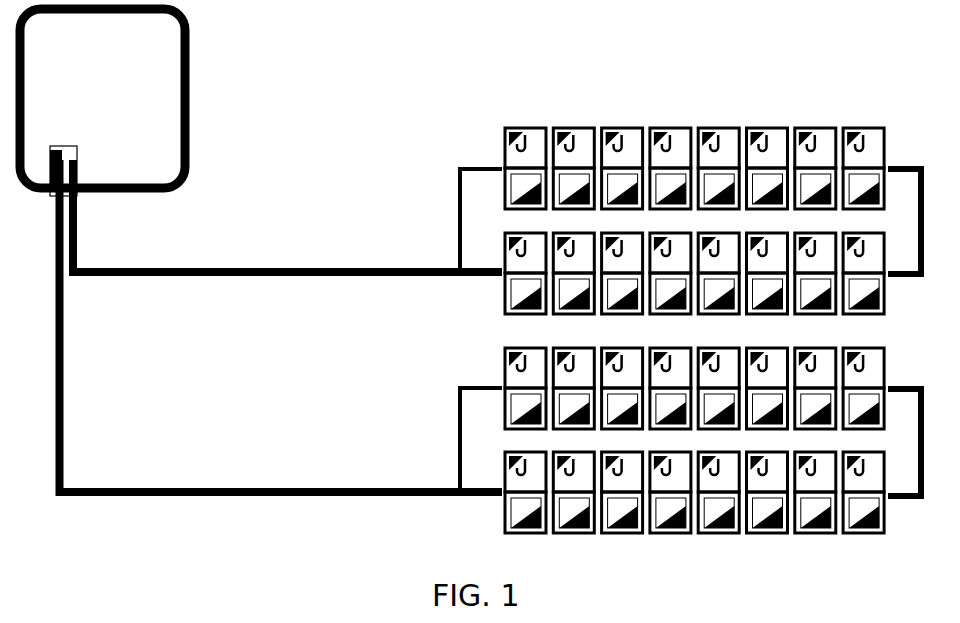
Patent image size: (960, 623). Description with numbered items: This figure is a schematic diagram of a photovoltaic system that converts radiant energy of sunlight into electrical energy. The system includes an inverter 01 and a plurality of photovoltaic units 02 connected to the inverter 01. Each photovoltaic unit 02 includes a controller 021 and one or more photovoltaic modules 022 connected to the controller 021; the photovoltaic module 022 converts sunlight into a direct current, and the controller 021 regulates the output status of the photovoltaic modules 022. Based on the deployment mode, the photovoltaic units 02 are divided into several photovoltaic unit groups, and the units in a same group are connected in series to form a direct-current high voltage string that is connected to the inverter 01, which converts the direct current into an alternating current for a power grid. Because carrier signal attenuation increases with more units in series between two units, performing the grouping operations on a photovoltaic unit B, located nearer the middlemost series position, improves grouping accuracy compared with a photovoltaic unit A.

The inverter 01 is at (203, 52).
The photovoltaic unit 02 is at (598, 308).
The controller 021 is at (636, 287).
The photovoltaic module 022 is at (490, 197).
The photovoltaic unit A is at (678, 114).
The photovoltaic unit B is at (822, 113).